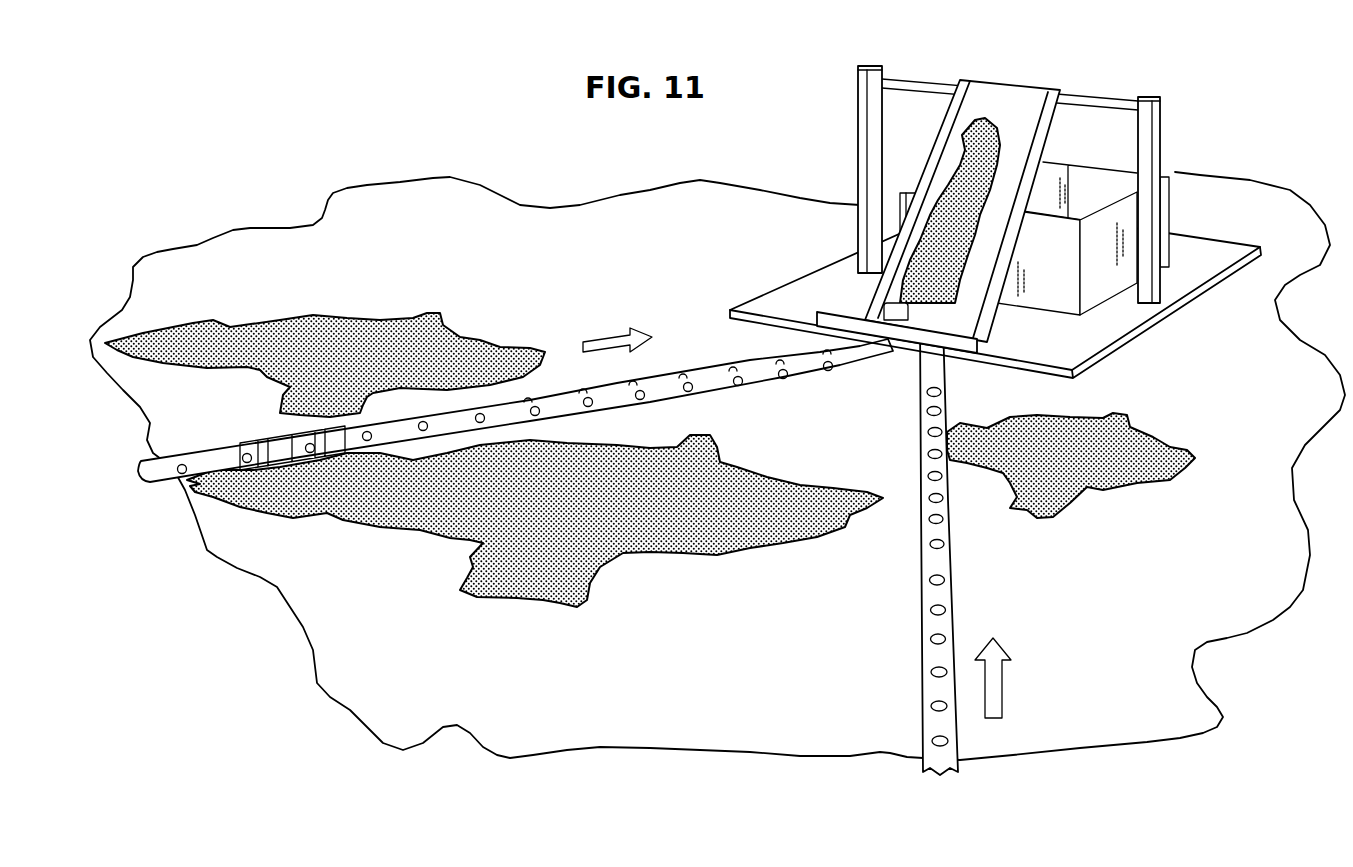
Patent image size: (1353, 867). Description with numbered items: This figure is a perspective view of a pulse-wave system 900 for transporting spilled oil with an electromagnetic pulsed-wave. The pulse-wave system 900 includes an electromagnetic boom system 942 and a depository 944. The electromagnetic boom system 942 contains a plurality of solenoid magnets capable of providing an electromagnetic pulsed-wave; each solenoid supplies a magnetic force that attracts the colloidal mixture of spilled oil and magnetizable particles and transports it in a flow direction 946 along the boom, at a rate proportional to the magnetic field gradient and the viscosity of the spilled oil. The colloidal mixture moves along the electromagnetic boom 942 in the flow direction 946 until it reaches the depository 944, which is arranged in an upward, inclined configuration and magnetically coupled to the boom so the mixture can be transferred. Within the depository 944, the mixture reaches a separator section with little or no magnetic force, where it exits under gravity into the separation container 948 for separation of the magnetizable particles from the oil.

The pulse-wave system 900 is at (365, 112).
The electromagnetic boom system 942 is at (560, 403).
The depository 944 is at (952, 183).
The flow direction 946 is at (624, 332).
The separation container 948 is at (1093, 190).